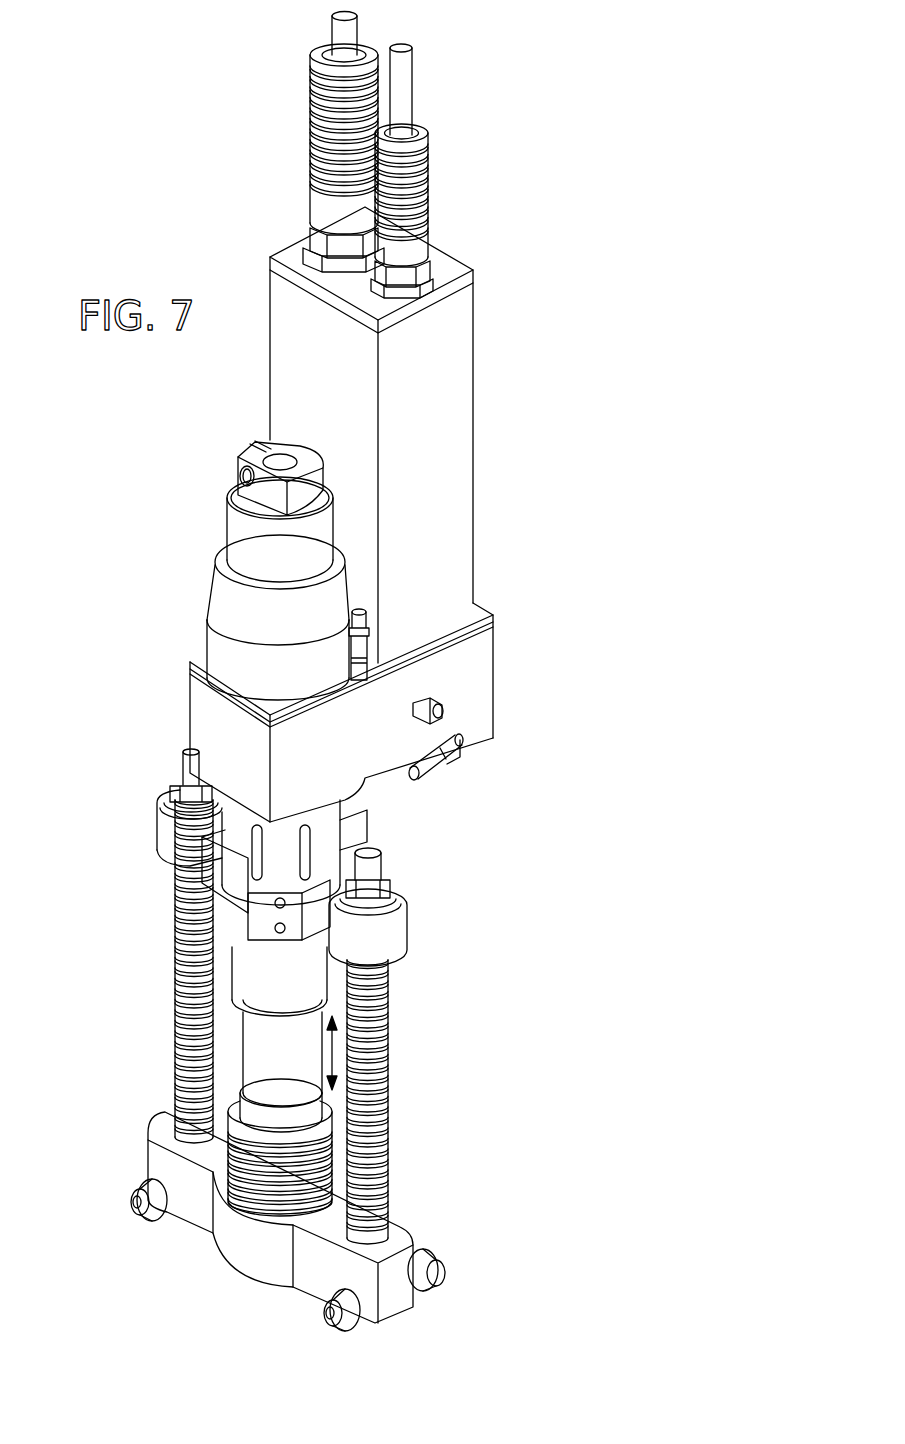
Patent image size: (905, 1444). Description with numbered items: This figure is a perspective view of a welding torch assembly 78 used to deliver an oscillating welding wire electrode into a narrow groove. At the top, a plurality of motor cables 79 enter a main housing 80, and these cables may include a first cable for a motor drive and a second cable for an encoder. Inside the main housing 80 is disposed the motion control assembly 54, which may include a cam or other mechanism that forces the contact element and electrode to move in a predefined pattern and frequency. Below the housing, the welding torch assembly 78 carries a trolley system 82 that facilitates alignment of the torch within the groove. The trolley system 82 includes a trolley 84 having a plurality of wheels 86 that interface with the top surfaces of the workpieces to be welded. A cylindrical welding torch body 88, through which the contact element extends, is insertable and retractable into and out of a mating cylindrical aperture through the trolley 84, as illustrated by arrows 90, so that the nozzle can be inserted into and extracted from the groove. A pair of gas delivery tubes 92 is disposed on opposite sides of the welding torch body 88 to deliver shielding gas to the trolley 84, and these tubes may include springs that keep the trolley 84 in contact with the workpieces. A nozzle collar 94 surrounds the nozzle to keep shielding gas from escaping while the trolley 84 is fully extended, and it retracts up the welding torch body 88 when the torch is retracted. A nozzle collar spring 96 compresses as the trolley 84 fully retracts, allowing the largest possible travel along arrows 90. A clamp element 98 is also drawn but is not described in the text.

The welding torch assembly 78 is at (168, 116).
The motor cables 79 is at (490, 102).
The main housing 80 is at (447, 425).
The motion control assembly 54 is at (531, 727).
The upper clamp 98 is at (230, 830).
The trolley system 82 is at (592, 990).
The gas delivery tubes 92 is at (197, 945).
The cylindrical welding torch body 88 is at (243, 1040).
The arrows 90 is at (340, 1050).
The nozzle collar 94 is at (237, 1117).
The nozzle collar spring 96 is at (330, 1170).
The trolley 84 is at (235, 1258).
The wheels 86 is at (128, 1213).